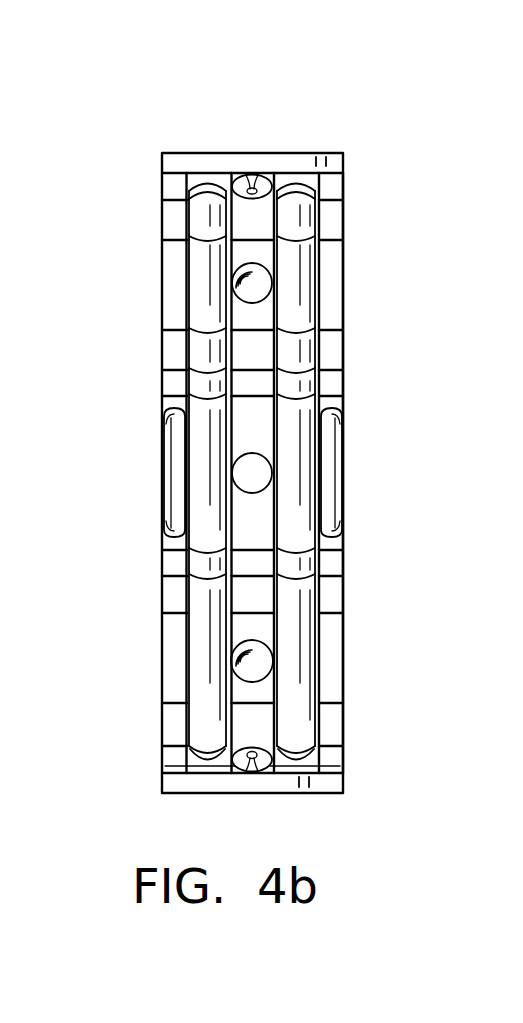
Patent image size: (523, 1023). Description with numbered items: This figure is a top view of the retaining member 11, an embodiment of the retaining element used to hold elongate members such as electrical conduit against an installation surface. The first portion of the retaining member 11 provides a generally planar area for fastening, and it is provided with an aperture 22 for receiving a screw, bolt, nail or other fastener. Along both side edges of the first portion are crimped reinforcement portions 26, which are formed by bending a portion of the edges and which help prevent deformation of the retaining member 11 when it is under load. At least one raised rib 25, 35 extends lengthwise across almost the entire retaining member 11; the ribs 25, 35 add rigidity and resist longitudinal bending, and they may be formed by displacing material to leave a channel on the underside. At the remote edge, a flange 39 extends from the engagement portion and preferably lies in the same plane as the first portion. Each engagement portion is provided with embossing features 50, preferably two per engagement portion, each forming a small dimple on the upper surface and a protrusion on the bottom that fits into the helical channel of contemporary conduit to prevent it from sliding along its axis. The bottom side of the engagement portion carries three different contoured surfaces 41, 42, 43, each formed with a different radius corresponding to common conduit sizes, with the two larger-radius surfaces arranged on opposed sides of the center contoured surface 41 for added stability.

The retaining member 11 is at (126, 160).
The flange 39 is at (305, 153).
The contoured surface 41 is at (343, 190).
The contoured surface 42 is at (345, 217).
The contoured surface 43 is at (345, 263).
The aperture 22 is at (248, 452).
The raised rib 25 is at (305, 465).
The crimped reinforcement portion 26 is at (160, 465).
The raised rib 35 is at (296, 585).
The embossing feature 50 is at (250, 642).